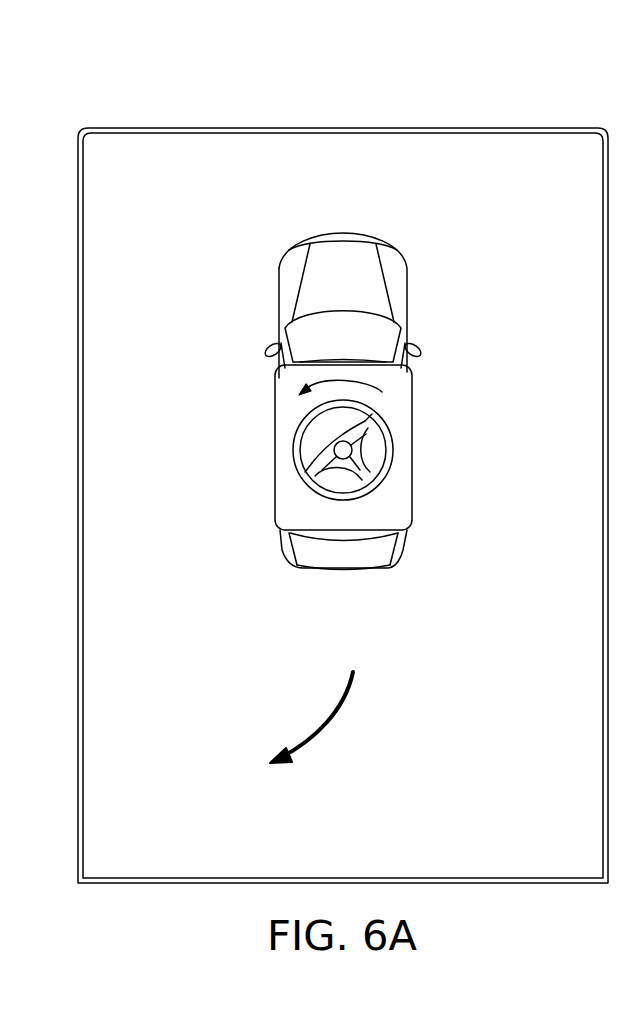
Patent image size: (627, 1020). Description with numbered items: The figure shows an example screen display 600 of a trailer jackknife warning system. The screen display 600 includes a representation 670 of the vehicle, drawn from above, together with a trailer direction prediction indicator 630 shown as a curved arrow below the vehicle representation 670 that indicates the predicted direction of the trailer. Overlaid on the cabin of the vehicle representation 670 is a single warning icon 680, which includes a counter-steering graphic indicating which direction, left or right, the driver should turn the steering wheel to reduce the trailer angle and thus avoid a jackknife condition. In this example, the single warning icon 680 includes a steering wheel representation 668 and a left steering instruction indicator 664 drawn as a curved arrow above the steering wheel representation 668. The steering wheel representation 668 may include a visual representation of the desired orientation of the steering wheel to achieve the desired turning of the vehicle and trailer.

The screen display 600 is at (115, 111).
The representation of the vehicle 670 is at (408, 283).
The single warning icon 680 is at (274, 448).
The left steering instruction indicator 664 is at (372, 380).
The steering wheel representation 668 is at (393, 452).
The trailer direction prediction indicator 630 is at (328, 725).